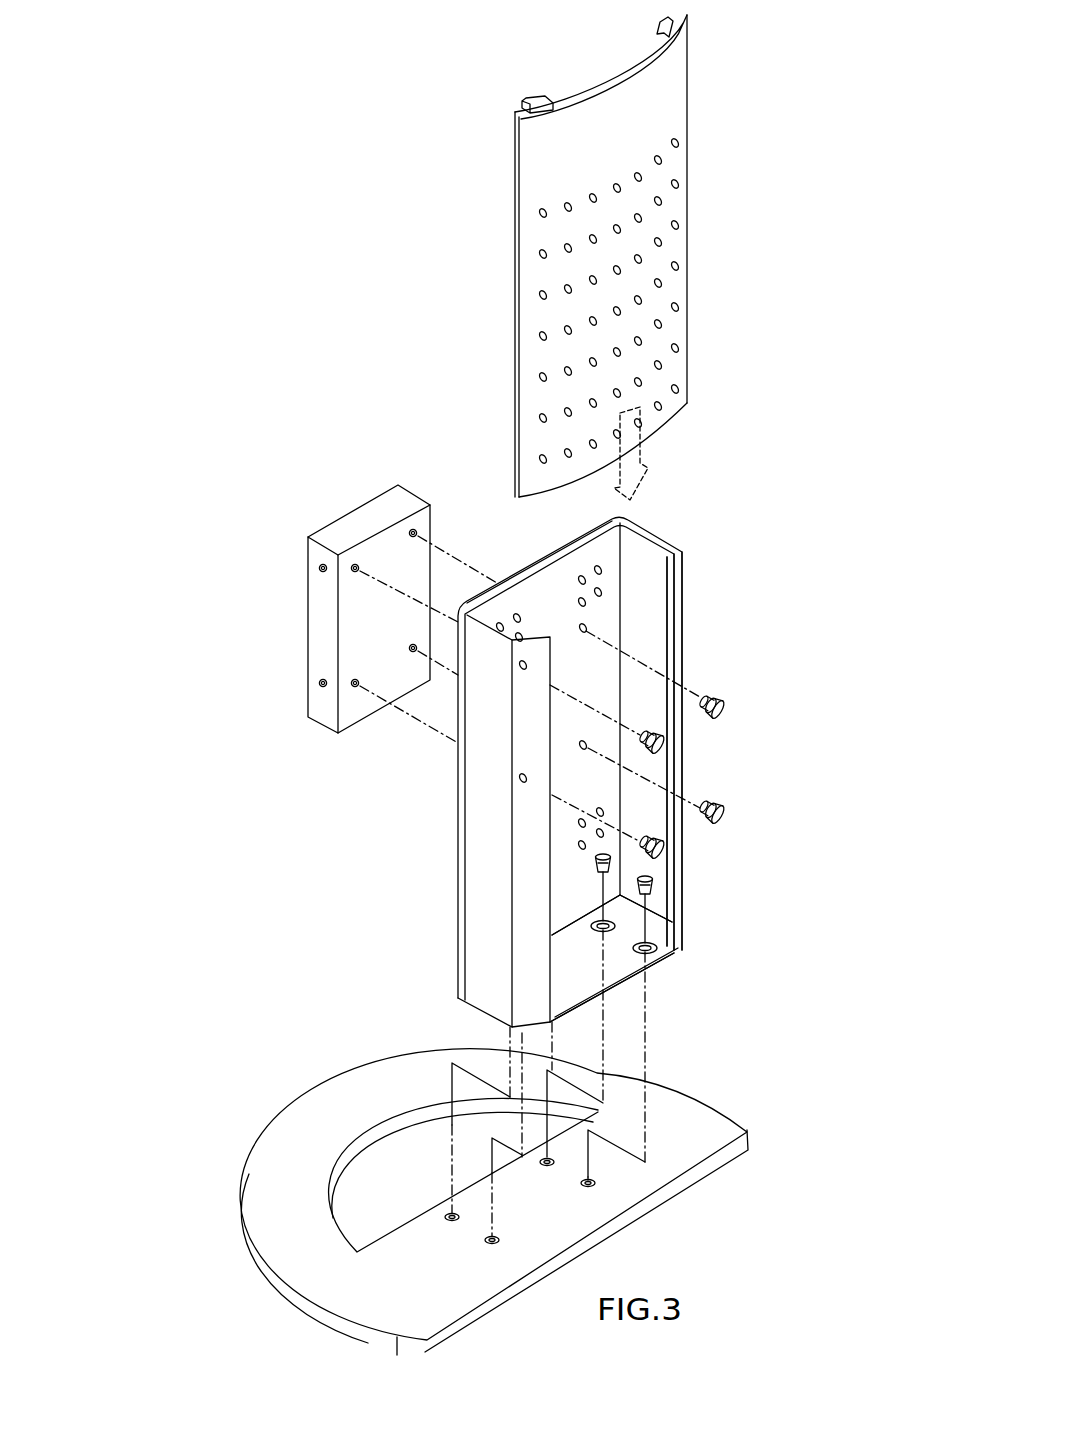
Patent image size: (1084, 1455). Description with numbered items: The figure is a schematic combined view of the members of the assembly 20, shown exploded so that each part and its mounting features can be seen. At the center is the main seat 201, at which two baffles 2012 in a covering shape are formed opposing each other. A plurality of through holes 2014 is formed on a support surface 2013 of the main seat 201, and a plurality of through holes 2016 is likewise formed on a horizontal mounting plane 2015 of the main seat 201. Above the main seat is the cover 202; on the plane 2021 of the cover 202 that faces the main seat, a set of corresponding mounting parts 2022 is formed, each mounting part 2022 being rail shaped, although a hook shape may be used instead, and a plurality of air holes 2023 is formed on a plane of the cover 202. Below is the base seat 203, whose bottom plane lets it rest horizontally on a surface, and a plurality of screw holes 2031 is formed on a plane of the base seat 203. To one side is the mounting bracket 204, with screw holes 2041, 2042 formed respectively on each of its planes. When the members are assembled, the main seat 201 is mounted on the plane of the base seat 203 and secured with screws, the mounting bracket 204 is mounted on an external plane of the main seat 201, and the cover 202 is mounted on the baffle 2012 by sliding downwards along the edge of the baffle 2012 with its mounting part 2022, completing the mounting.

The drying device 20 is at (398, 280).
The main seat 201 is at (460, 824).
The baffle 2012 is at (680, 890).
The support surface 2013 is at (530, 587).
The through hole 2014 is at (600, 572).
The horizontal mounting plane 2015 is at (605, 975).
The through hole 2016 is at (674, 950).
The cover 202 is at (676, 330).
The plane of the cover facing the main seat 2021 is at (613, 76).
The mounting part 2022 is at (533, 103).
The air hole 2023 is at (676, 222).
The base seat 203 is at (310, 1128).
The screw hole 2031 is at (592, 1183).
The mounting bracket 204 is at (358, 520).
The screw hole 2041 is at (320, 570).
The screw hole 2042 is at (418, 534).